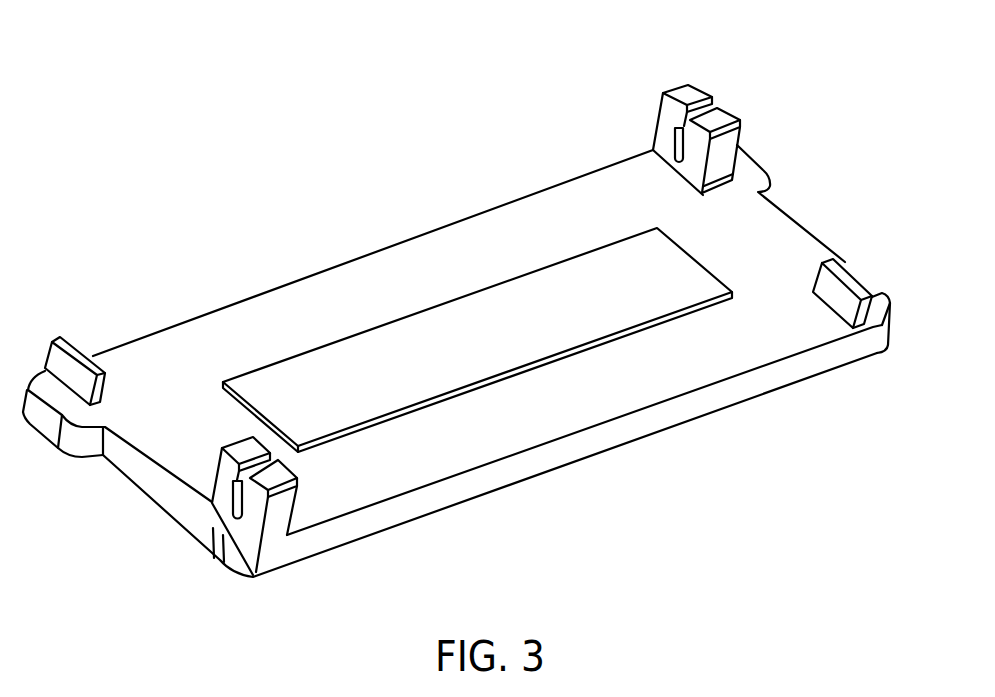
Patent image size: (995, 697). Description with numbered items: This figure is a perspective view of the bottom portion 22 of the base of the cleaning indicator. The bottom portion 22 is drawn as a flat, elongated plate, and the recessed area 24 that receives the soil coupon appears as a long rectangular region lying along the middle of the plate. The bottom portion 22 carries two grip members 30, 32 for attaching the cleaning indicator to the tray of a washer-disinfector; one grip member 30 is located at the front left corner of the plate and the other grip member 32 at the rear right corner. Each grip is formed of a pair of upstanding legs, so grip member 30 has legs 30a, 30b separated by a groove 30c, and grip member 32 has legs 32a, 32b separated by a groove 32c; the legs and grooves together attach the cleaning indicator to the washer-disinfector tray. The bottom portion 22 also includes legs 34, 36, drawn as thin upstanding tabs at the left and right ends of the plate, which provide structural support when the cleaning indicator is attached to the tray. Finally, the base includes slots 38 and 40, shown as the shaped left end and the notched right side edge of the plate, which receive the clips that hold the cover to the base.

The bottom portion 22 is at (452, 457).
The recessed area 24 is at (620, 337).
The grip member 30 is at (227, 514).
The leg 30a is at (237, 443).
The leg 30b is at (277, 490).
The groove 30c is at (243, 487).
The grip member 32 is at (675, 99).
The leg 32a is at (693, 92).
The leg 32b is at (723, 112).
The groove 32c is at (678, 130).
The leg 34 is at (67, 363).
The leg 36 is at (837, 293).
The slot 38 is at (130, 468).
The slot 40 is at (792, 218).